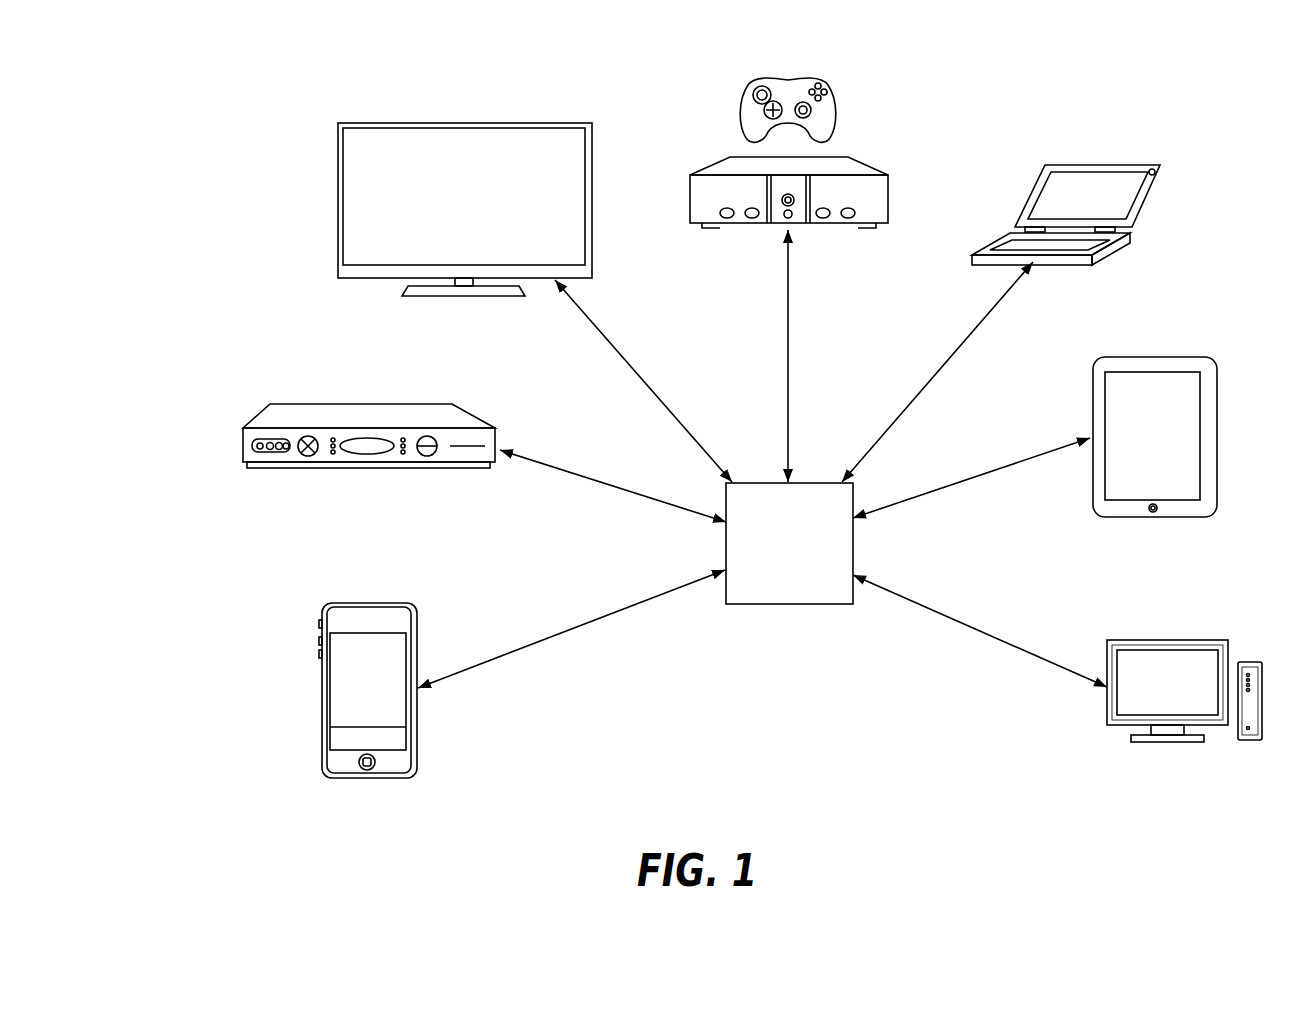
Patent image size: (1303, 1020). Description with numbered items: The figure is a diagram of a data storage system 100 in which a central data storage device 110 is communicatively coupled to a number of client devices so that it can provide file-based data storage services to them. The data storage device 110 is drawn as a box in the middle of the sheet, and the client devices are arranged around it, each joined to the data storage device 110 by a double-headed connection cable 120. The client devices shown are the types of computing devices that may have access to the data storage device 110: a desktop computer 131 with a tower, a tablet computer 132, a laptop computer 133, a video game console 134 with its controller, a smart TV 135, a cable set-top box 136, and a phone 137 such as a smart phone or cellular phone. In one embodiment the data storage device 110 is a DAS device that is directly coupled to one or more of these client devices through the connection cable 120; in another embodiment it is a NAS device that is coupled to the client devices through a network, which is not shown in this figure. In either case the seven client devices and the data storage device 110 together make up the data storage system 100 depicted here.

The data storage system 100 is at (226, 145).
The data storage device 110 is at (788, 604).
The connection cable 120 is at (627, 360).
The desktop computer 131 is at (1170, 640).
The tablet computer 132 is at (1153, 357).
The laptop computer 133 is at (1105, 165).
The video game console 134 is at (860, 162).
The smart TV 135 is at (465, 123).
The cable set-top box 136 is at (378, 404).
The phone 137 is at (370, 603).